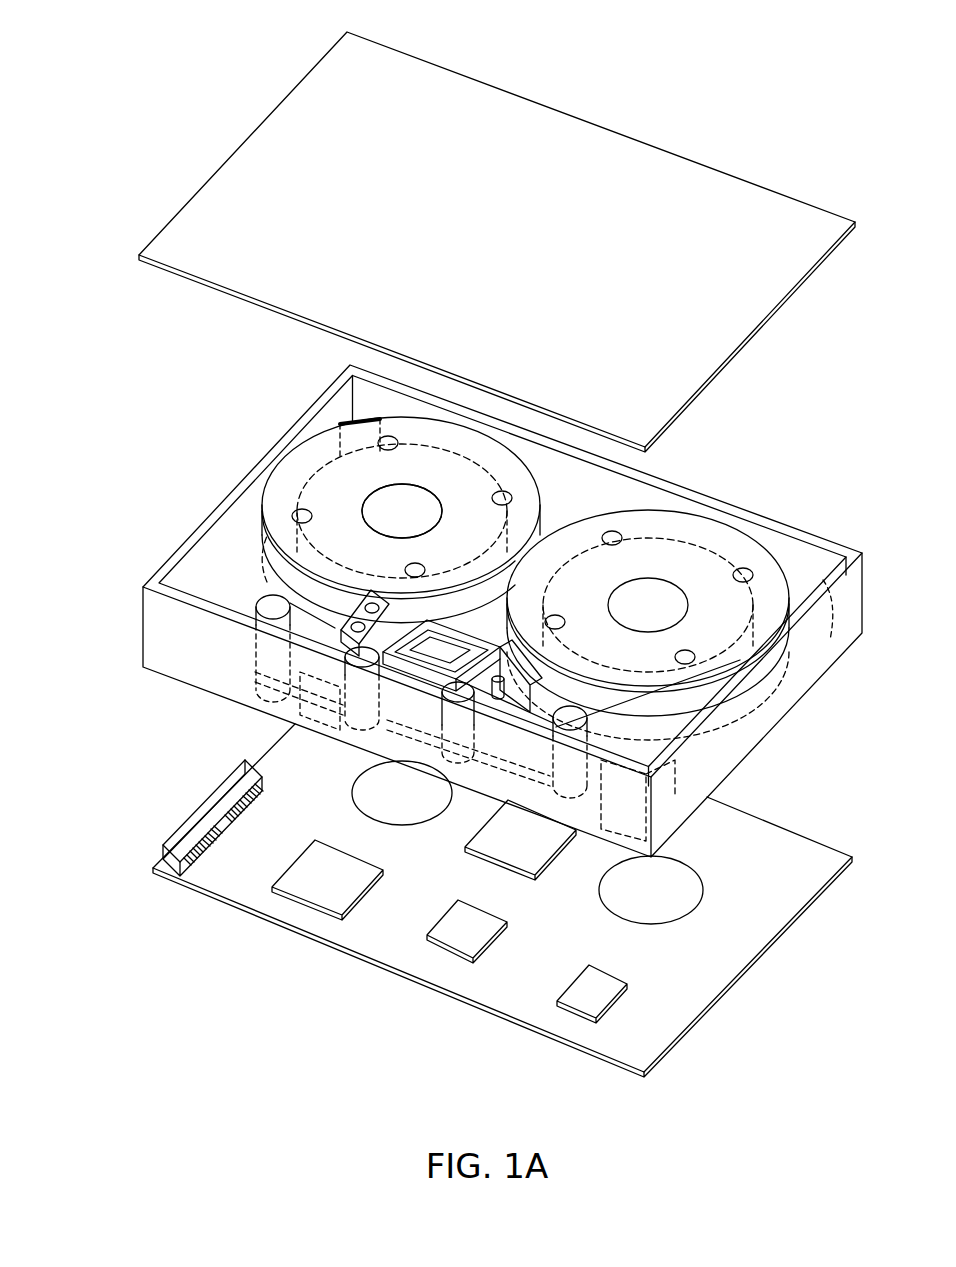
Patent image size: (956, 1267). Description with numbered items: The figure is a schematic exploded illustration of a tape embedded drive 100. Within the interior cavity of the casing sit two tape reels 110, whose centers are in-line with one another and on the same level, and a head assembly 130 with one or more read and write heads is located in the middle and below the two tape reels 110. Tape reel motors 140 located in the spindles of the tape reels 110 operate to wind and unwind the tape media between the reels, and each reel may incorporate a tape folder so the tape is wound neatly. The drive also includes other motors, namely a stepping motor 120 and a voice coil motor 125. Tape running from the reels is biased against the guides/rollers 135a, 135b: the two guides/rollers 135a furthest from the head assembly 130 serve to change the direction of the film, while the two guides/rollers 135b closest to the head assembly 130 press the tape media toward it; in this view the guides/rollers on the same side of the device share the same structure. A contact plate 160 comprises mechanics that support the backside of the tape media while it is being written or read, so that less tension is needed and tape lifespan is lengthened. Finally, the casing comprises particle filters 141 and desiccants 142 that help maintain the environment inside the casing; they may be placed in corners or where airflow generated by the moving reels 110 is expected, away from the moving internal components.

The tape embedded drive 100 is at (762, 100).
The tape reels 110 is at (453, 425).
The stepping motor 120 is at (327, 623).
The voice coil motor 125 is at (425, 640).
The head assembly 130 is at (425, 640).
The guides/rollers 135a is at (263, 598).
The guides/rollers 135b is at (363, 655).
The tape reel motors 140 is at (373, 493).
The particle filters 141 is at (863, 628).
The desiccants 142 is at (660, 796).
The contact plate 160 is at (343, 727).